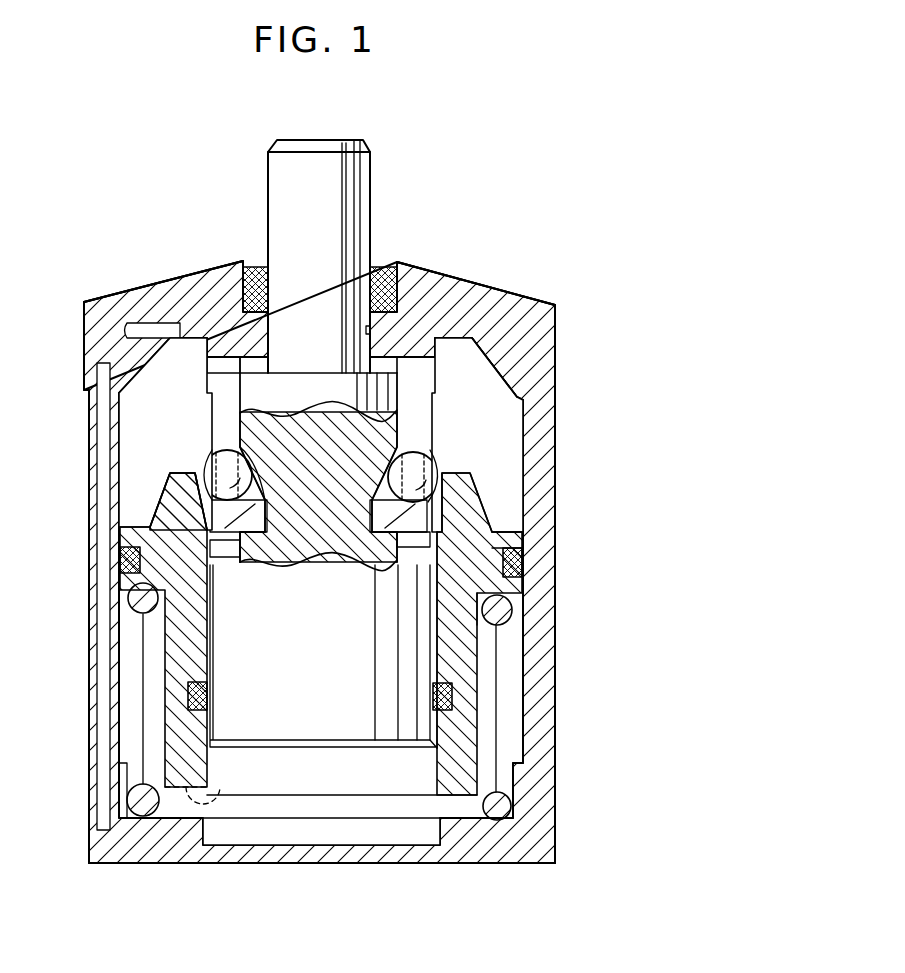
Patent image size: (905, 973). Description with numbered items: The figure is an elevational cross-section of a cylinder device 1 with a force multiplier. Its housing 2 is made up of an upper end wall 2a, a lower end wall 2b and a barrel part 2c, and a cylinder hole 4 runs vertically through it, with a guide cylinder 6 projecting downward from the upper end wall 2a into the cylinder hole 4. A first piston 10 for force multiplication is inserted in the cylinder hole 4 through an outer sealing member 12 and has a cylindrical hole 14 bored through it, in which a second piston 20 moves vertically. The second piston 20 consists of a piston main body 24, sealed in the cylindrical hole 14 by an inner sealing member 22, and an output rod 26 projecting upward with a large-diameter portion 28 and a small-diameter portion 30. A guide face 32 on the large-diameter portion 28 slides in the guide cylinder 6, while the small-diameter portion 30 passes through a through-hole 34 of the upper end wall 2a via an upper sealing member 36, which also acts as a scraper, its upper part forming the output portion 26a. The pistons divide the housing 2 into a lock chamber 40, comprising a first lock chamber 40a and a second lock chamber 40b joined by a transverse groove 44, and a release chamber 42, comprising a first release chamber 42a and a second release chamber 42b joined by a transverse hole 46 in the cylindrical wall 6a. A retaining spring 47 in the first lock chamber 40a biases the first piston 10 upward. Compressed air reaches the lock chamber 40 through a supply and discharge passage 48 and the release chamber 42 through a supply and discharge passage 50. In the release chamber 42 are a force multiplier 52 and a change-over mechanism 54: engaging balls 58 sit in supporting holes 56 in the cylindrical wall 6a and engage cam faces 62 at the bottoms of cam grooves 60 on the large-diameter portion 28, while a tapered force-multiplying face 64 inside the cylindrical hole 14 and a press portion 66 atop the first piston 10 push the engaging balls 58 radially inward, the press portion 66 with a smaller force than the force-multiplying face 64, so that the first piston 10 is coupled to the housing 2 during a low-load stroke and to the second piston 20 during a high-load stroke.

The cylinder device 1 is at (522, 232).
The housing 2 is at (558, 483).
The upper end wall 2a is at (437, 297).
The lower end wall 2b is at (367, 857).
The barrel part 2c is at (547, 615).
The cylinder hole 4 is at (520, 652).
The guide cylinder 6 is at (435, 410).
The cylindrical wall 6a is at (417, 388).
The first piston 10 is at (524, 538).
The outer sealing member 12 is at (522, 563).
The cylindrical hole 14 is at (210, 637).
The second piston 20 is at (300, 751).
The inner sealing member 22 is at (209, 694).
The piston main body 24 is at (385, 733).
The output rod 26 is at (267, 208).
The output portion 26a is at (365, 143).
The large-diameter portion 28 is at (322, 387).
The small-diameter portion 30 is at (362, 208).
The guide face 32 is at (238, 401).
The through-hole 34 is at (372, 330).
The upper sealing member 36 is at (397, 265).
The lock chamber 40 is at (238, 833).
The first lock chamber 40a is at (513, 747).
The second lock chamber 40b is at (408, 810).
The release chamber 42 is at (185, 352).
The first release chamber 42a is at (510, 443).
The second release chamber 42b is at (402, 362).
The transverse groove 44 is at (223, 794).
The transverse hole 46 is at (223, 363).
The retaining spring 47 is at (507, 803).
The supply and discharge passage 48 is at (102, 708).
The supply and discharge passage 50 is at (152, 333).
The force multiplier 52 is at (214, 538).
The change-over mechanism 54 is at (176, 449).
The supporting holes 56 is at (232, 445).
The engaging balls 58 is at (207, 457).
The cam grooves 60 is at (310, 415).
The cam face 62 is at (243, 547).
The force-multiplying face 64 is at (217, 555).
The press portion 66 is at (187, 473).